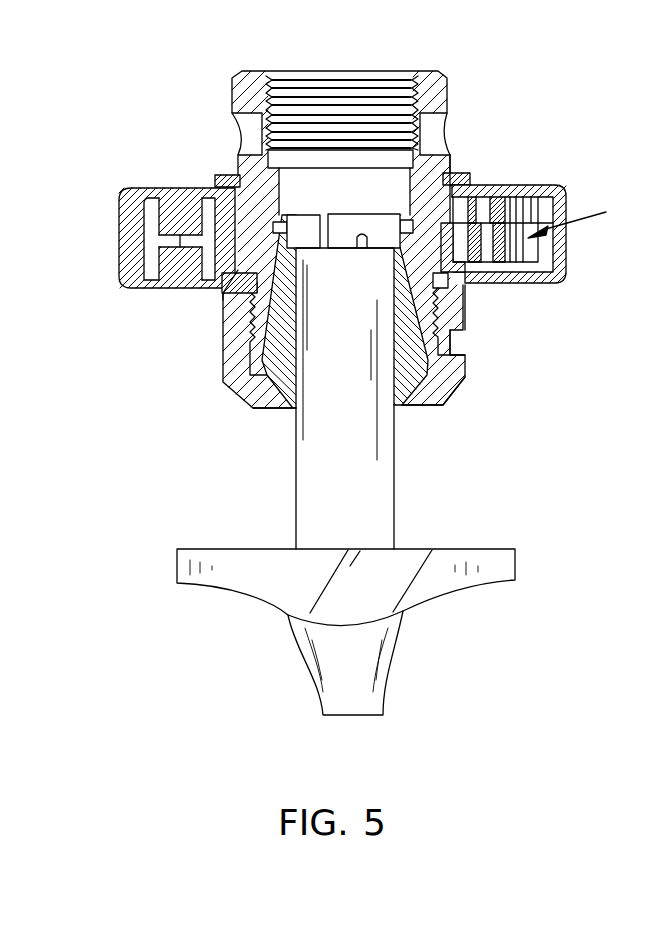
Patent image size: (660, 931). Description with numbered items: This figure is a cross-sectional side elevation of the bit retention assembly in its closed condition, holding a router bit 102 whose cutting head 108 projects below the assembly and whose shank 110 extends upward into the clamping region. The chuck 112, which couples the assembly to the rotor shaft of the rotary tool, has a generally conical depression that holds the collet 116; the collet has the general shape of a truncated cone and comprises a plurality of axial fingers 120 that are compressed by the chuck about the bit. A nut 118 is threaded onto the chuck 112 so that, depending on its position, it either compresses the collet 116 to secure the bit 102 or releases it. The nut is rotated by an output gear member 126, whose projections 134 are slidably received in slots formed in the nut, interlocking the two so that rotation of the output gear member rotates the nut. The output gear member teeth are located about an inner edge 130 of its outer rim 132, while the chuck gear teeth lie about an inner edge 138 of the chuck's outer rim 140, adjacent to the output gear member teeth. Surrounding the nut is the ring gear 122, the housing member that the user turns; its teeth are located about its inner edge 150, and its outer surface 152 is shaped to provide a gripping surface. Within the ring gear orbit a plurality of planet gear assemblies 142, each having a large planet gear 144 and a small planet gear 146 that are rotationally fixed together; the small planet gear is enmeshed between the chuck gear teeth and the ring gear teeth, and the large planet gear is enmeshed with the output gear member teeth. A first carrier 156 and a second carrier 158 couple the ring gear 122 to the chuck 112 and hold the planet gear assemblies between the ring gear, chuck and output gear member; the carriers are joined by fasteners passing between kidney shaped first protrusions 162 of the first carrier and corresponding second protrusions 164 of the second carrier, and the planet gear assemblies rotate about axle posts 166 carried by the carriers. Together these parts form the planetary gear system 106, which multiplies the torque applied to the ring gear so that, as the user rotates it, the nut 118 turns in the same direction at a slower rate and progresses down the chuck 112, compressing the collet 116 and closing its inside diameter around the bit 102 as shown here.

The router bit 102 is at (393, 665).
The planetary gear system 106 is at (587, 214).
The cutting head 108 is at (455, 580).
The shank 110 is at (355, 462).
The chuck 112 is at (448, 74).
The collet 116 is at (287, 410).
The nut 118 is at (415, 357).
The axial fingers 120 is at (445, 387).
The ring gear 122 is at (127, 257).
The output gear member 126 is at (222, 292).
The inner edge 130 is at (485, 285).
The outer rim 132 is at (433, 232).
The projections 134 is at (463, 318).
The inner edge 138 is at (544, 267).
The outer rim 140 is at (458, 175).
The planet gear assemblies 142 is at (547, 283).
The large planet gear 144 is at (533, 252).
The small planet gear 146 is at (533, 193).
The inner edge 150 is at (143, 202).
The outer surface 152 is at (120, 270).
The first carrier 156 is at (161, 251).
The second carrier 158 is at (138, 287).
The first protrusions 162 is at (203, 192).
The second protrusions 164 is at (188, 267).
The axle posts 166 is at (517, 287).